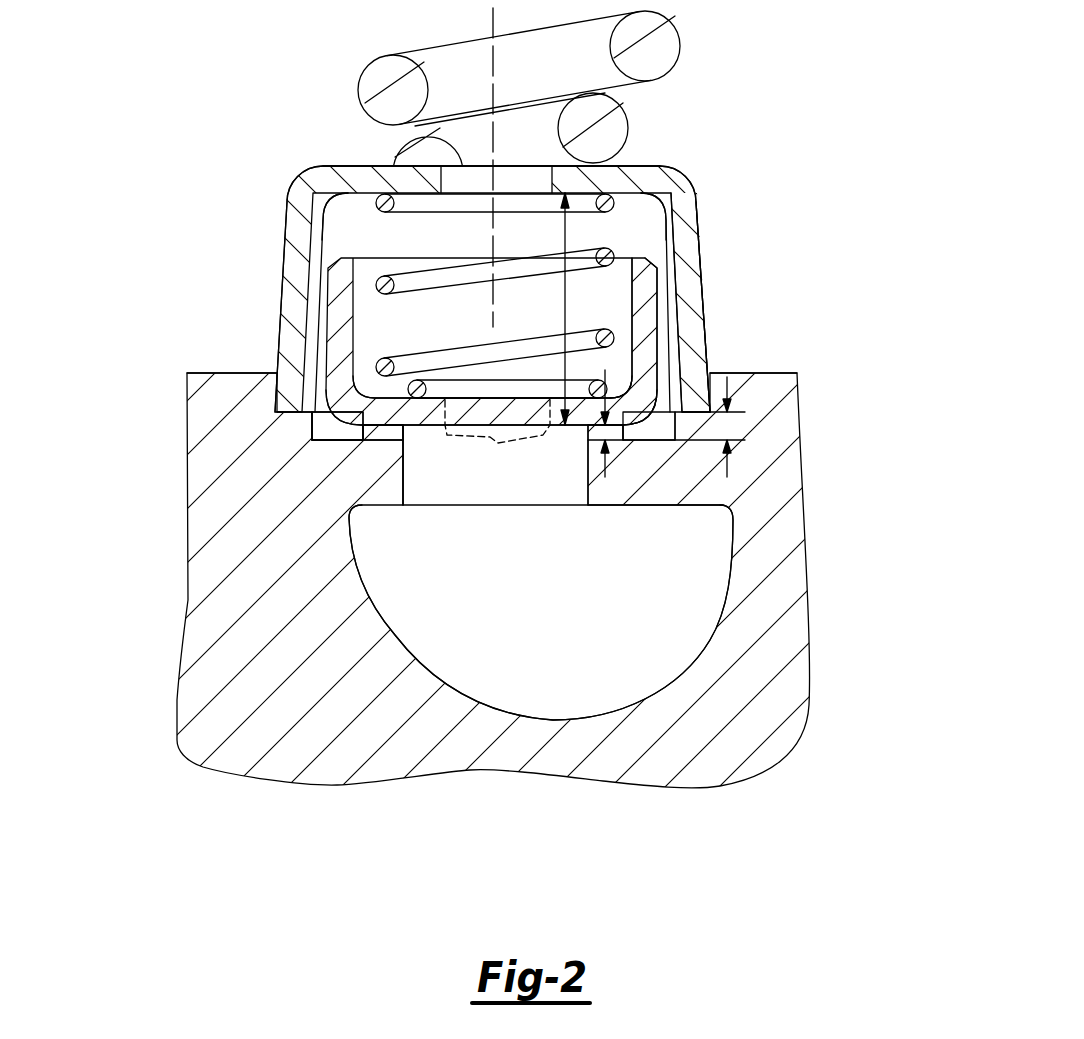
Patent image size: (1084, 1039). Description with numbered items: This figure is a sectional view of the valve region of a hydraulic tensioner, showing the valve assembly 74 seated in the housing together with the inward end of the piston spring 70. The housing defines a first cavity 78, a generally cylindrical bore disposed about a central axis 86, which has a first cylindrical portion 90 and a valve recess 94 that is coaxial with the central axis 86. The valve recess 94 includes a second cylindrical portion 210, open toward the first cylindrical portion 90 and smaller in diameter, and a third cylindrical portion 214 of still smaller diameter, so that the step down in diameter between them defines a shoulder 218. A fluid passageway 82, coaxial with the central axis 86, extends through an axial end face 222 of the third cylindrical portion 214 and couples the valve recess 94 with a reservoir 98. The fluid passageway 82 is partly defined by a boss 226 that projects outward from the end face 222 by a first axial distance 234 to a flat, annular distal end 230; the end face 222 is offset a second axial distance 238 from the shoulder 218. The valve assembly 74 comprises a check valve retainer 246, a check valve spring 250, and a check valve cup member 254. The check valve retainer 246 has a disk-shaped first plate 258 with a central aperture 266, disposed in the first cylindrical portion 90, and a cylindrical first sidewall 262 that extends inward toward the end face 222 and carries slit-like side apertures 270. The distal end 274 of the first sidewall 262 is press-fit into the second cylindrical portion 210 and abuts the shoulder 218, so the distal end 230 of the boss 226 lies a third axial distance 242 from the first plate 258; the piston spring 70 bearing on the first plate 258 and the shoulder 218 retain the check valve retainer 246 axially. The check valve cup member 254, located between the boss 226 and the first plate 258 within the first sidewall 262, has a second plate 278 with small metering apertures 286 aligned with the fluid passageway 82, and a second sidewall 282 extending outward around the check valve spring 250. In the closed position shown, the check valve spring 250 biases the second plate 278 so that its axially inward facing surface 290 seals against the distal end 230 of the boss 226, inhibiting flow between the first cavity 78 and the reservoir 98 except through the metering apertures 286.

The piston spring 70 is at (648, 47).
The valve assembly 74 is at (278, 307).
The first cavity 78 is at (245, 95).
The fluid passageway 82 is at (610, 505).
The central axis 86 is at (490, 60).
The first cylindrical portion 90 is at (790, 97).
The valve recess 94 is at (275, 383).
The reservoir 98 is at (533, 690).
The second cylindrical portion 210 is at (291, 428).
The third cylindrical portion 214 is at (305, 440).
The shoulder 218 is at (310, 437).
The axial end face 222 is at (334, 440).
The boss 226 is at (385, 428).
The distal end 230 is at (392, 428).
The first axial distance 234 is at (600, 430).
The second axial distance 238 is at (732, 428).
The third axial distance 242 is at (565, 290).
The check valve retainer 246 is at (296, 222).
The check valve spring 250 is at (385, 197).
The check valve cup member 254 is at (345, 296).
The first plate 258 is at (673, 168).
The first sidewall 262 is at (692, 256).
The aperture 266 is at (572, 180).
The side apertures 270 is at (325, 222).
The distal end 274 is at (694, 412).
The second plate 278 is at (395, 410).
The second sidewall 282 is at (653, 295).
The metering apertures 286 is at (497, 438).
The axially inward facing surface 290 is at (575, 428).